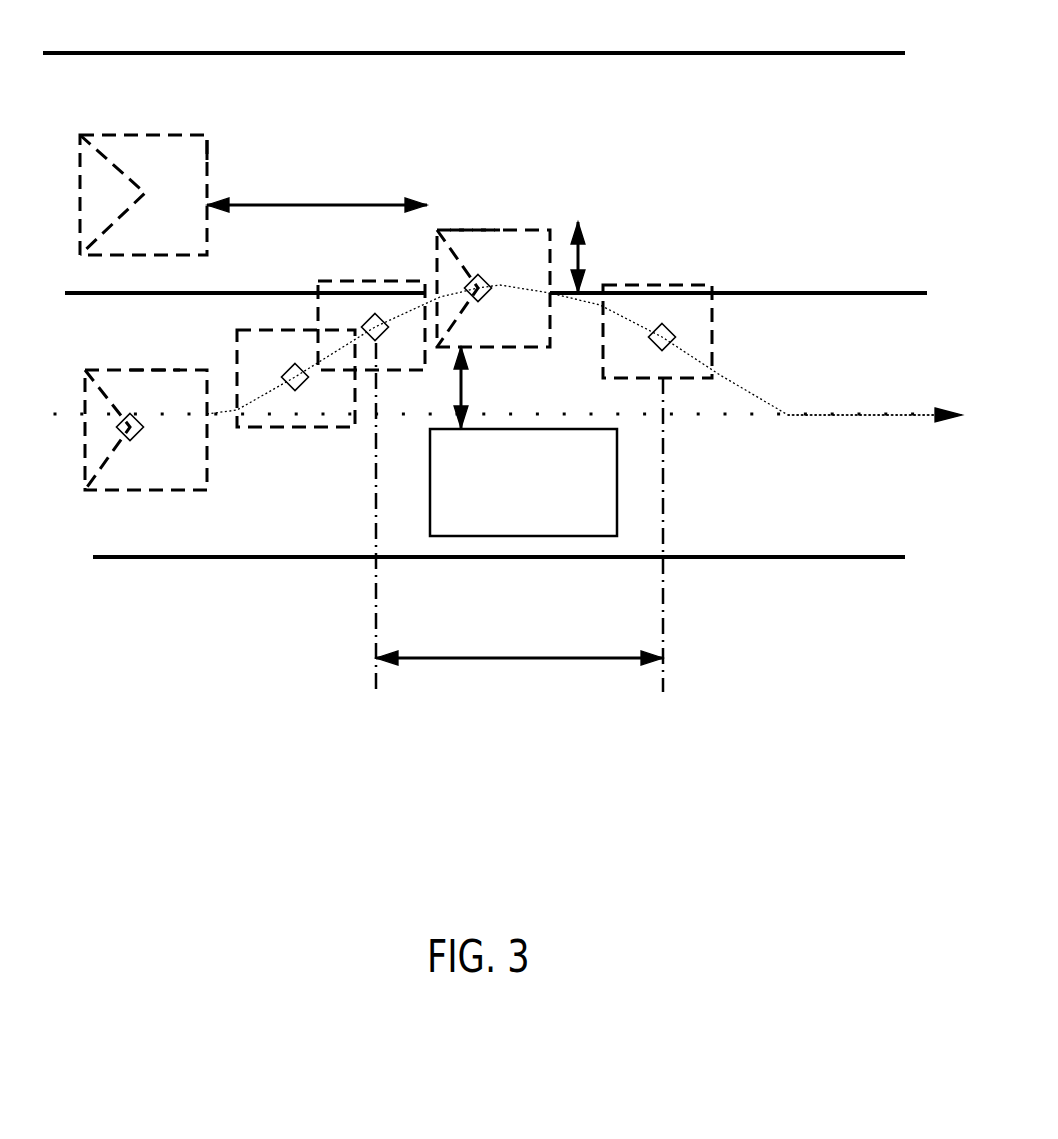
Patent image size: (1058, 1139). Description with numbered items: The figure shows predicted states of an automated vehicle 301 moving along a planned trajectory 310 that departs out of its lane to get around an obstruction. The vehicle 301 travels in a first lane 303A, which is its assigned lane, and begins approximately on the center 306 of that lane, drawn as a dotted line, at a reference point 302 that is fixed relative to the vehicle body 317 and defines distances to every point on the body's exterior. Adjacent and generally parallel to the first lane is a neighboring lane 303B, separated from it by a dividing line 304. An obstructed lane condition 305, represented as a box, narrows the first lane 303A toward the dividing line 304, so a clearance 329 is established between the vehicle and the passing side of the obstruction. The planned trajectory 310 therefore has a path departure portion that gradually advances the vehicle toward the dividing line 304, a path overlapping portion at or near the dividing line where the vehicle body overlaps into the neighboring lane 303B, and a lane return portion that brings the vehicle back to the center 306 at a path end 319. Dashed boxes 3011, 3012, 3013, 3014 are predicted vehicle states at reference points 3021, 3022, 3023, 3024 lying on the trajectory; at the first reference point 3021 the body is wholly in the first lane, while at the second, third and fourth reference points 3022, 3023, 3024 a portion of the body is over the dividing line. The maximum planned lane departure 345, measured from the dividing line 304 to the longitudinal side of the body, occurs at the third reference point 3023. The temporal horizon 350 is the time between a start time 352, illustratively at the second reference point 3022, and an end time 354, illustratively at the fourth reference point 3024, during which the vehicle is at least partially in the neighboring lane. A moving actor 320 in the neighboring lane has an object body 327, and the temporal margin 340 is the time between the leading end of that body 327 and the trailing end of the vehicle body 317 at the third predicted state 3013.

The automated vehicle 301 is at (87, 377).
The reference point 302 is at (195, 490).
The lane 303A is at (863, 524).
The neighboring lane 303B is at (856, 94).
The dividing line 304 is at (882, 288).
The obstructed lane condition 305 is at (540, 522).
The center of the lane 306 is at (910, 413).
The planned trajectory 310 is at (755, 397).
The vehicle body 317 is at (155, 370).
The path end 319 is at (818, 420).
The moving actor 320 is at (152, 134).
The object's body 327 is at (208, 147).
The clearance 329 is at (461, 385).
The temporal margin 340 is at (321, 197).
The maximum planned lane departure 345 is at (580, 265).
The temporal horizon 350 is at (495, 660).
The start time 352 is at (375, 658).
The end time 354 is at (665, 658).
The predicted automated vehicle state 3011 is at (237, 330).
The predicted automated vehicle state 3012 is at (318, 281).
The predicted automated vehicle state 3013 is at (500, 228).
The predicted automated vehicle state 3014 is at (675, 280).
The reference point 3021 is at (280, 430).
The reference point 3022 is at (395, 362).
The reference point 3023 is at (462, 258).
The reference point 3024 is at (673, 337).